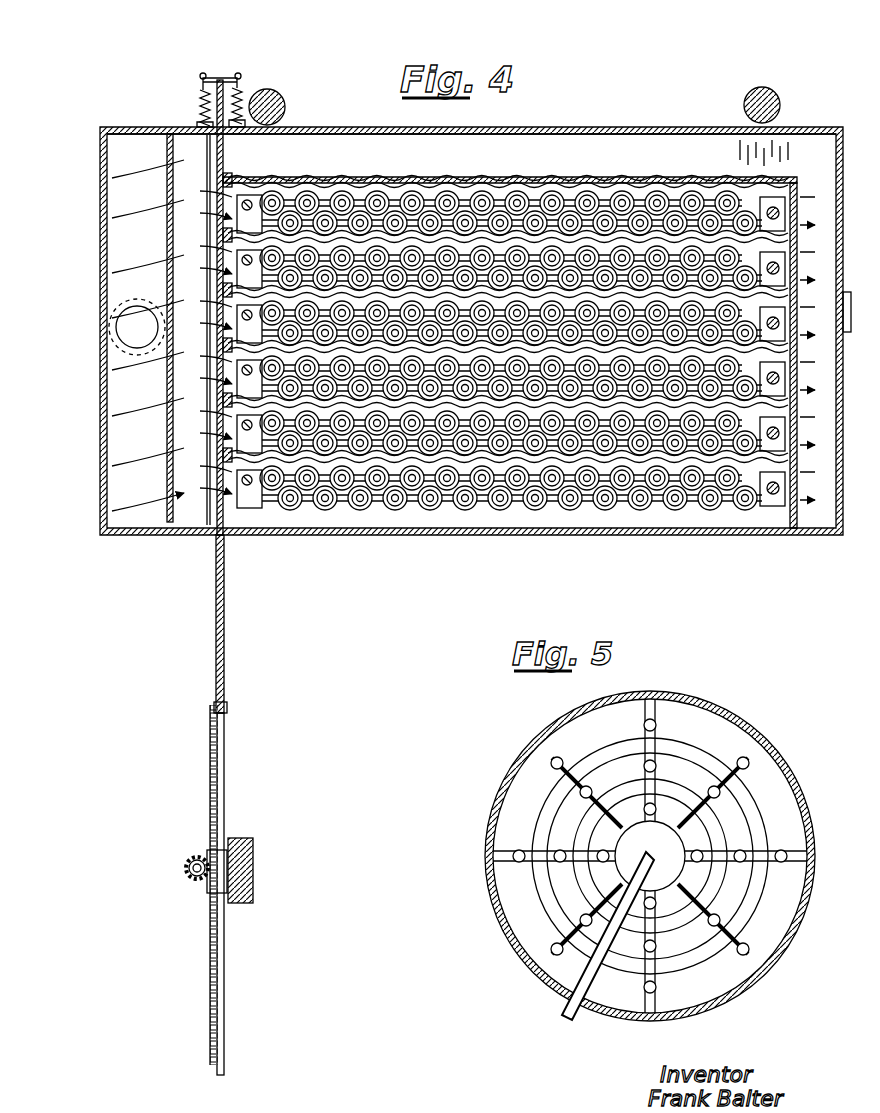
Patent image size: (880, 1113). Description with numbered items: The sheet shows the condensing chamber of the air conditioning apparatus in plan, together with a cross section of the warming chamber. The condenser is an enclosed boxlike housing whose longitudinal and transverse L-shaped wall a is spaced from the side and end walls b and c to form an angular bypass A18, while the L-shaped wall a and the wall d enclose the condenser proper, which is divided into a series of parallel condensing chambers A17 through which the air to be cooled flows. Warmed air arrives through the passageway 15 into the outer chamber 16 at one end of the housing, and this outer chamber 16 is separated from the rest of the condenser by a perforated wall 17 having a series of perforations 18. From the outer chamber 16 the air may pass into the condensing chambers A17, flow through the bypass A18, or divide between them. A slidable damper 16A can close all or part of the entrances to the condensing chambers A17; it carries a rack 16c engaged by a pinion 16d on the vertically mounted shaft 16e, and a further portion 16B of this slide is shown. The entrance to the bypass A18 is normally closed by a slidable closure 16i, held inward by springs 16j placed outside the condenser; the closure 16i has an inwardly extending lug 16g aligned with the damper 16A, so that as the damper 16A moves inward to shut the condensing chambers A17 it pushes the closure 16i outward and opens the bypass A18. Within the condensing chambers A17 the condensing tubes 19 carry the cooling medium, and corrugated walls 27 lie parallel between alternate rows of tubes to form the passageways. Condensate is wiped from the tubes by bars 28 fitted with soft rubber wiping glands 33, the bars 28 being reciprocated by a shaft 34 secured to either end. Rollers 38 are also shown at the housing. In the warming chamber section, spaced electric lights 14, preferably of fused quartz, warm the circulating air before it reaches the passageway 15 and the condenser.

In FIG. 5, the electric lights 14 is at (747, 753).
In FIG. 4, the passageway 15 is at (125, 338).
In FIG. 4, the outer chamber 16 is at (128, 420).
In FIG. 4, the damper 16A is at (228, 632).
In FIG. 4, the rack bar 16B is at (225, 745).
In FIG. 4, the rack 16c is at (215, 773).
In FIG. 4, the pinion 16d is at (200, 884).
In FIG. 4, the shaft 16e is at (188, 876).
In FIG. 4, the lug 16g is at (200, 200).
In FIG. 4, the closure 16i is at (215, 102).
In FIG. 4, the springs 16j is at (247, 80).
In FIG. 4, the perforated wall 17 is at (130, 265).
In FIG. 4, the perforations 18 is at (130, 237).
In FIG. 4, the condensing tubes 19 is at (680, 273).
In FIG. 4, the corrugated walls 27 is at (510, 413).
In FIG. 4, the bars 28 is at (380, 523).
In FIG. 4, the wiping glands 33 is at (580, 508).
In FIG. 4, the shaft 34 is at (245, 530).
In FIG. 4, the roller 38 is at (285, 104).
In FIG. 4, the condensing chambers A17 is at (717, 470).
In FIG. 4, the bypass A18 is at (335, 152).
In FIG. 4, the L-shaped wall a is at (480, 178).
In FIG. 4, the side wall b is at (670, 123).
In FIG. 4, the end wall c is at (837, 410).
In FIG. 4, the wall d is at (593, 533).